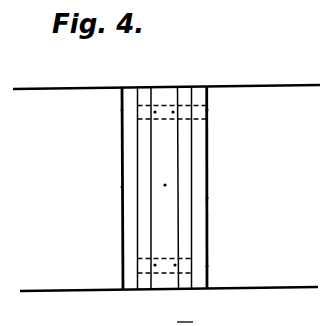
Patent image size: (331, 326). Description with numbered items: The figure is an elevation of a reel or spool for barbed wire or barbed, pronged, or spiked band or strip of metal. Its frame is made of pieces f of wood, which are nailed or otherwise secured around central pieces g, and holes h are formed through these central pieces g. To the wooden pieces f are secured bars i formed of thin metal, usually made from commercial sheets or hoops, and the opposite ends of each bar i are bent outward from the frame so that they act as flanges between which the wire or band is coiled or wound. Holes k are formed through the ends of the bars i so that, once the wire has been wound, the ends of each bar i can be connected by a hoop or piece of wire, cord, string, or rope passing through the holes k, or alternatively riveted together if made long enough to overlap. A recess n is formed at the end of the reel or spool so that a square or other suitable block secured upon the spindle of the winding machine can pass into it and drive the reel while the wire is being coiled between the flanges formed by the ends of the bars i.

The end of bar i' is at (166, 85).
The bar i is at (165, 188).
The piece of wood f is at (132, 197).
The recess n is at (151, 93).
The hole h is at (172, 110).
The central piece g is at (200, 107).
The hole k is at (191, 318).